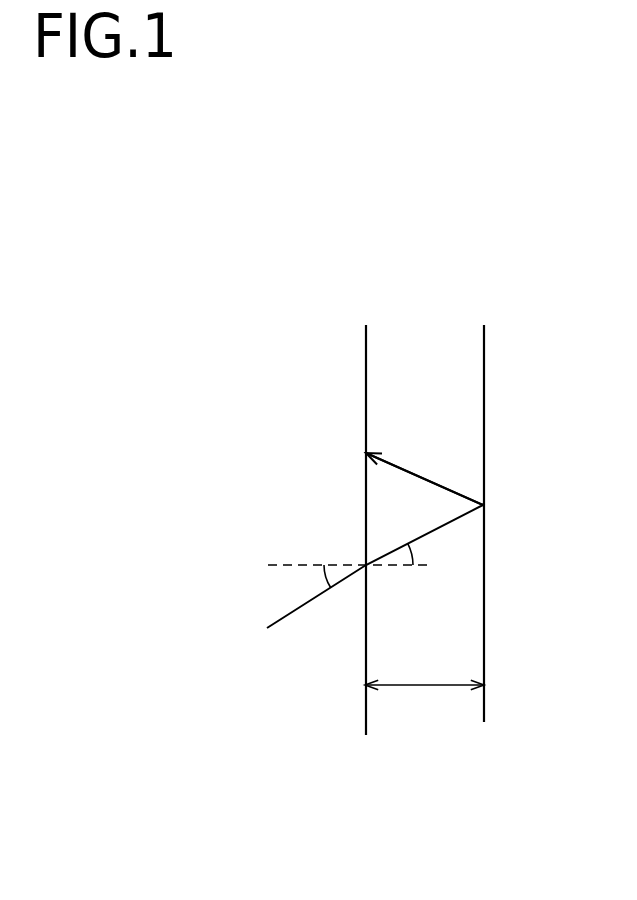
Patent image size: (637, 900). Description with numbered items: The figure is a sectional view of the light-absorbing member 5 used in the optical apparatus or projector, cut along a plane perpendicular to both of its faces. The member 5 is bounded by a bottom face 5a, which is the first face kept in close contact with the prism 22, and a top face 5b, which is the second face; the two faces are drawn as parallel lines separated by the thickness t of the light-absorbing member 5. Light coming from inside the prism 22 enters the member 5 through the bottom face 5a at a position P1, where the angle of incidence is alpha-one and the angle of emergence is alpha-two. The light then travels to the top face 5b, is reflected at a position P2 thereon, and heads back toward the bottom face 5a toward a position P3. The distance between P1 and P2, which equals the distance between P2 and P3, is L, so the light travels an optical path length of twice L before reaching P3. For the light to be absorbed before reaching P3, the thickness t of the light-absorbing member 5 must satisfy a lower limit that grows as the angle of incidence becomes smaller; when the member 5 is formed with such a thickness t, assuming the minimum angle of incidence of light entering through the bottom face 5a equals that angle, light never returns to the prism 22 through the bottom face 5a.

The light-absorbing member 5 is at (421, 486).
The bottom face 5a is at (366, 356).
The top face 5b is at (484, 370).
The prism 22 is at (375, 540).
The position on the bottom face P1 is at (347, 606).
The position on the top face P2 is at (511, 508).
The position on the bottom face P3 is at (337, 443).
The distance between P1 and P2 L is at (481, 500).
The thickness of the light-absorbing member t is at (424, 706).